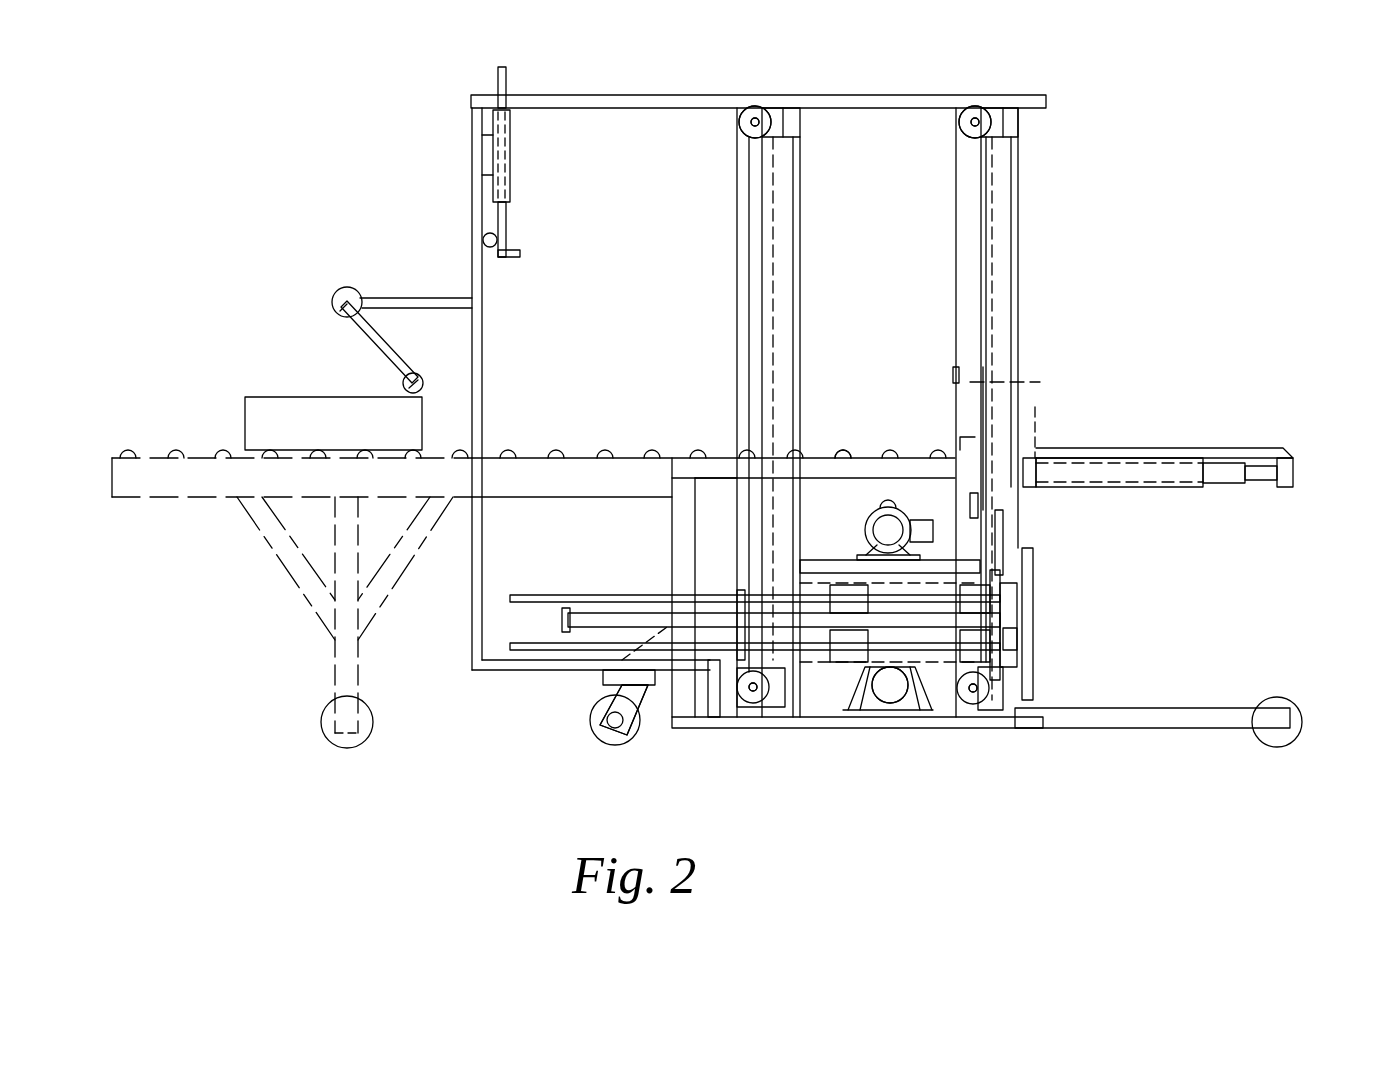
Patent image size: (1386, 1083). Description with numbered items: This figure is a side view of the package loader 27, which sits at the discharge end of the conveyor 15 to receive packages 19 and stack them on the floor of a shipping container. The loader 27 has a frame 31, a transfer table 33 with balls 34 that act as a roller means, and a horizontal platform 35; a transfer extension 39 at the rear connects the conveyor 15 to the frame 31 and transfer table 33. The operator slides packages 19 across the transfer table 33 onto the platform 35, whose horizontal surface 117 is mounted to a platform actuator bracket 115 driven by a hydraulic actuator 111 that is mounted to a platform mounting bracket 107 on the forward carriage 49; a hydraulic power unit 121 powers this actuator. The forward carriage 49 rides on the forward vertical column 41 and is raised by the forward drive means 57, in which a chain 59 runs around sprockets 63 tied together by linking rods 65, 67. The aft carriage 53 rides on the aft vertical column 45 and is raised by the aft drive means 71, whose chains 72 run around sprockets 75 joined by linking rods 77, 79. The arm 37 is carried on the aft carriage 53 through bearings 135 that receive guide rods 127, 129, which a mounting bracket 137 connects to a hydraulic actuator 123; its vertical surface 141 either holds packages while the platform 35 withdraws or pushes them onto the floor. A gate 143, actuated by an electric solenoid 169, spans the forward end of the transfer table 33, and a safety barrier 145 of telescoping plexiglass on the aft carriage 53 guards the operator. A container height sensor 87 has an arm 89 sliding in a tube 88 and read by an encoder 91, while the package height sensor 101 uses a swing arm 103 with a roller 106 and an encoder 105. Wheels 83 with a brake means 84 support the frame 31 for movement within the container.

The conveyor 15 is at (140, 485).
The packages 19 is at (272, 412).
The package loader 27 is at (1055, 327).
The frame 31 is at (632, 100).
The transfer table 33 is at (680, 468).
The balls 34 is at (843, 452).
The horizontal platform 35 is at (1205, 458).
The arm 37 is at (1033, 615).
The transfer extension 39 is at (520, 475).
The forward vertical column 41 is at (1018, 167).
The aft vertical column 45 is at (790, 170).
The forward carriage 49 is at (1035, 410).
The aft carriage 53 is at (808, 690).
The forward drive means 57 is at (995, 224).
The chain 59 is at (963, 108).
The sprockets 63 is at (968, 108).
The linking rod 65 is at (980, 118).
The linking rod 67 is at (978, 700).
The aft drive means 71 is at (732, 250).
The chains 72 is at (758, 120).
The sprockets 75 is at (738, 125).
The linking rod 77 is at (758, 110).
The linking rod 79 is at (755, 700).
The wheels 83 is at (598, 712).
The brake means 84 is at (598, 738).
The container height sensor 87 is at (510, 147).
The tube 88 is at (510, 120).
The arm 89 is at (504, 80).
The encoder 91 is at (484, 236).
The package height sensor 101 is at (327, 287).
The swing arm 103 is at (360, 360).
The encoder 105 is at (350, 290).
The roller 106 is at (385, 345).
The platform mounting bracket 107 is at (1133, 490).
The hydraulic actuator 111 is at (1225, 480).
The platform actuator bracket 115 is at (1293, 466).
The horizontal surface 117 is at (1115, 458).
The hydraulic power unit 121 is at (876, 512).
The hydraulic actuator 123 is at (580, 612).
The guide rod 127 is at (515, 595).
The guide rod 129 is at (507, 645).
The bearings 135 is at (842, 593).
The mounting bracket 137 is at (1018, 605).
The vertical surface 141 is at (1035, 688).
The gate 143 is at (975, 468).
The safety barrier 145 is at (1003, 522).
The electric solenoid 169 is at (967, 508).